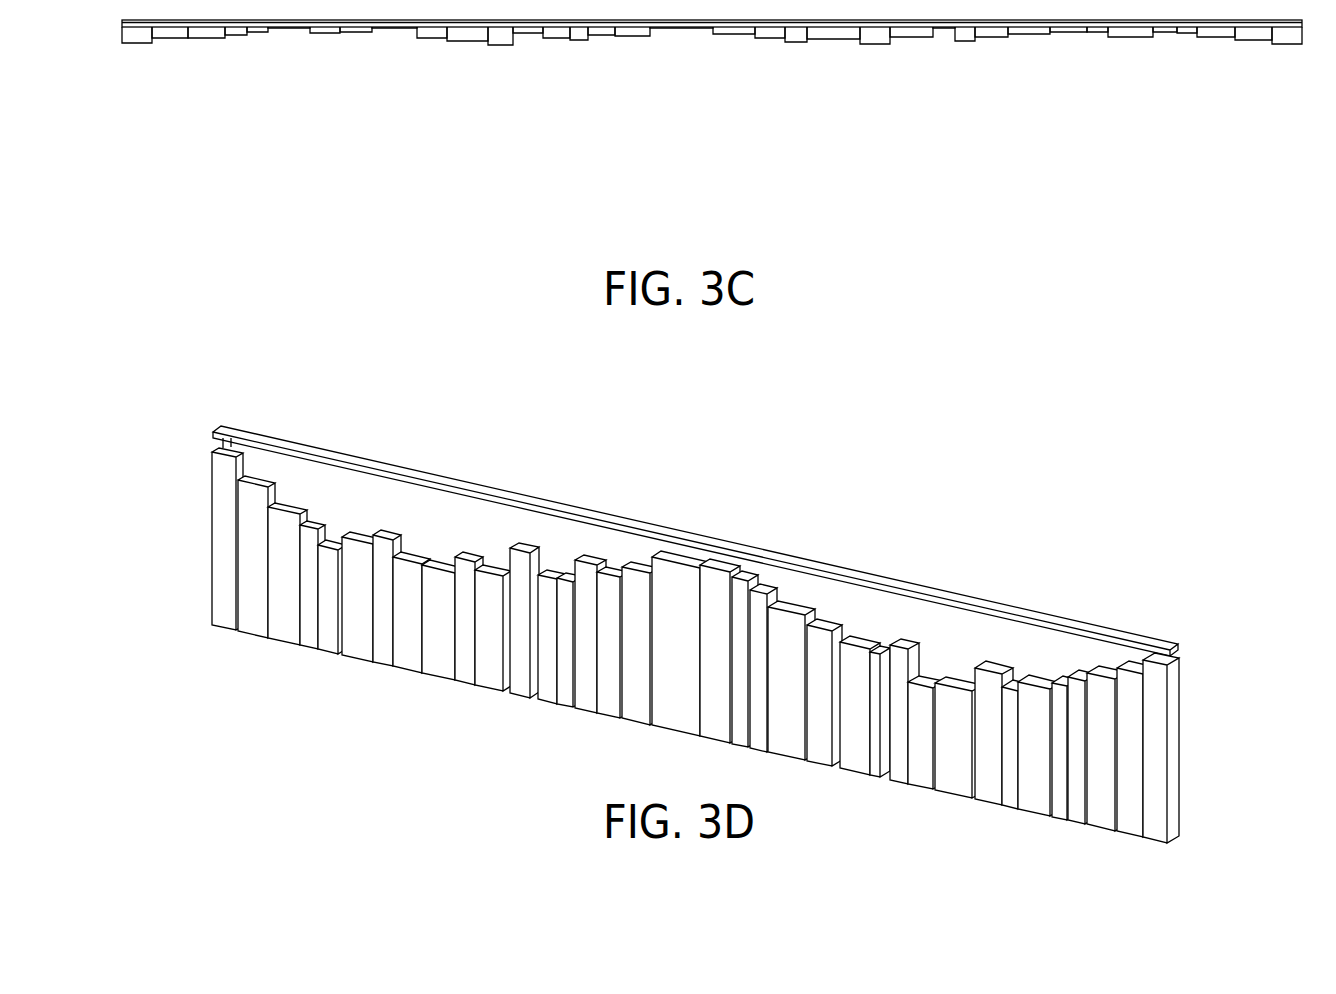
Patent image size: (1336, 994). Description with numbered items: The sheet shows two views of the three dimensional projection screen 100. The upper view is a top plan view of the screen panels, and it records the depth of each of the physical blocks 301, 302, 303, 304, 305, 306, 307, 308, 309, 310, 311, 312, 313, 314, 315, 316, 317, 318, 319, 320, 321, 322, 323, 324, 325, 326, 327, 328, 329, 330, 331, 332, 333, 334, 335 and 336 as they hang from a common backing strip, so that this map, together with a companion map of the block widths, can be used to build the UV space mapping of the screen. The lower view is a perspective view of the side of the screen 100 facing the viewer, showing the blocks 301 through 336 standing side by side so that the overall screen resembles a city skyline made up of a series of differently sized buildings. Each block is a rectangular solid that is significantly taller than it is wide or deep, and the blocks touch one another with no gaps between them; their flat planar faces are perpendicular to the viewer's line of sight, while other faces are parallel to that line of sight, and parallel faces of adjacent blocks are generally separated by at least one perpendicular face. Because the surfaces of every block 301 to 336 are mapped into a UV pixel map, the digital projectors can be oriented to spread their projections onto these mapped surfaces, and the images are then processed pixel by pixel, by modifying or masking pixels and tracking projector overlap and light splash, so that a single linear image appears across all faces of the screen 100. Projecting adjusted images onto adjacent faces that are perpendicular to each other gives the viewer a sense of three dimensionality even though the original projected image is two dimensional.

In FIG. 3D, the screen 100 is at (180, 516).
In FIG. 3C, the physical block 301 is at (137, 44).
In FIG. 3D, the physical block 301 is at (228, 452).
In FIG. 3C, the physical block 302 is at (170, 39).
In FIG. 3D, the physical block 302 is at (257, 480).
In FIG. 3C, the physical block 303 is at (206, 39).
In FIG. 3D, the physical block 303 is at (288, 507).
In FIG. 3C, the physical block 304 is at (236, 36).
In FIG. 3D, the physical block 304 is at (313, 524).
In FIG. 3C, the physical block 305 is at (257, 33).
In FIG. 3D, the physical block 305 is at (332, 544).
In FIG. 3C, the physical block 306 is at (289, 29).
In FIG. 3D, the physical block 306 is at (361, 537).
In FIG. 3C, the physical block 307 is at (325, 34).
In FIG. 3D, the physical block 307 is at (387, 534).
In FIG. 3C, the physical block 308 is at (356, 33).
In FIG. 3D, the physical block 308 is at (411, 557).
In FIG. 3C, the physical block 309 is at (394, 29).
In FIG. 3D, the physical block 309 is at (443, 565).
In FIG. 3C, the physical block 310 is at (432, 39).
In FIG. 3D, the physical block 310 is at (469, 556).
In FIG. 3C, the physical block 311 is at (467, 42).
In FIG. 3D, the physical block 311 is at (493, 570).
In FIG. 3C, the physical block 312 is at (500, 46).
In FIG. 3D, the physical block 312 is at (524, 547).
In FIG. 3C, the physical block 313 is at (528, 34).
In FIG. 3D, the physical block 313 is at (552, 574).
In FIG. 3C, the physical block 314 is at (556, 39).
In FIG. 3D, the physical block 314 is at (569, 576).
In FIG. 3C, the physical block 315 is at (579, 41).
In FIG. 3D, the physical block 315 is at (590, 559).
In FIG. 3C, the physical block 316 is at (601, 36).
In FIG. 3D, the physical block 316 is at (613, 571).
In FIG. 3C, the physical block 317 is at (632, 37).
In FIG. 3D, the physical block 317 is at (641, 566).
In FIG. 3C, the physical block 318 is at (681, 29).
In FIG. 3D, the physical block 318 is at (681, 559).
In FIG. 3C, the physical block 319 is at (734, 35).
In FIG. 3D, the physical block 319 is at (720, 565).
In FIG. 3C, the physical block 320 is at (770, 39).
In FIG. 3D, the physical block 320 is at (745, 575).
In FIG. 3C, the physical block 321 is at (796, 43).
In FIG. 3D, the physical block 321 is at (763, 588).
In FIG. 3C, the physical block 322 is at (833, 40).
In FIG. 3D, the physical block 322 is at (791, 607).
In FIG. 3C, the physical block 323 is at (875, 45).
In FIG. 3D, the physical block 323 is at (825, 624).
In FIG. 3C, the physical block 324 is at (911, 38).
In FIG. 3D, the physical block 324 is at (860, 641).
In FIG. 3C, the physical block 325 is at (944, 29).
In FIG. 3D, the physical block 325 is at (880, 649).
In FIG. 3C, the physical block 326 is at (965, 42).
In FIG. 3D, the physical block 326 is at (904, 643).
In FIG. 3C, the physical block 327 is at (991, 38).
In FIG. 3D, the physical block 327 is at (926, 681).
In FIG. 3C, the physical block 328 is at (1029, 35).
In FIG. 3D, the physical block 328 is at (959, 683).
In FIG. 3C, the physical block 329 is at (1068, 33).
In FIG. 3D, the physical block 329 is at (994, 667).
In FIG. 3C, the physical block 330 is at (1097, 33).
In FIG. 3D, the physical block 330 is at (1016, 684).
In FIG. 3C, the physical block 331 is at (1130, 38).
In FIG. 3D, the physical block 331 is at (1040, 681).
In FIG. 3C, the physical block 332 is at (1165, 33).
In FIG. 3D, the physical block 332 is at (1065, 680).
In FIG. 3C, the physical block 333 is at (1187, 34).
In FIG. 3D, the physical block 333 is at (1082, 674).
In FIG. 3C, the physical block 334 is at (1216, 38).
In FIG. 3D, the physical block 334 is at (1107, 672).
In FIG. 3C, the physical block 335 is at (1253, 41).
In FIG. 3D, the physical block 335 is at (1136, 666).
In FIG. 3C, the physical block 336 is at (1287, 45).
In FIG. 3D, the physical block 336 is at (1168, 650).